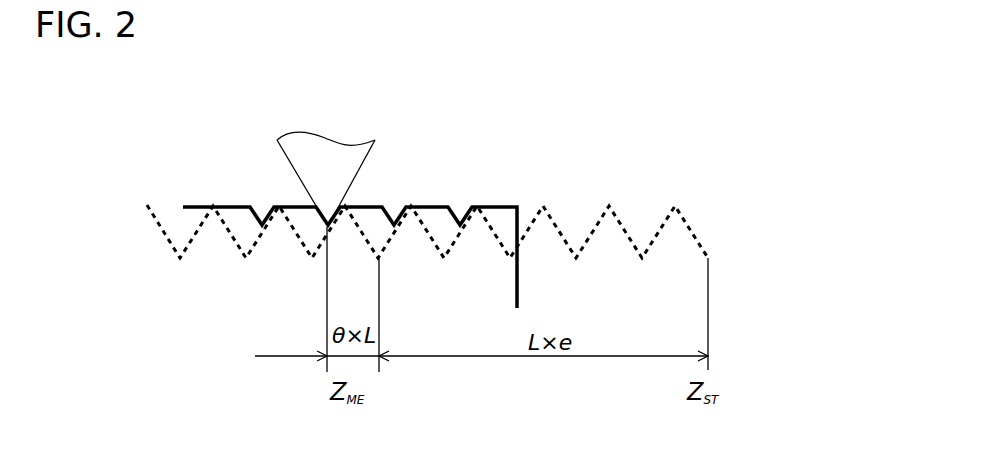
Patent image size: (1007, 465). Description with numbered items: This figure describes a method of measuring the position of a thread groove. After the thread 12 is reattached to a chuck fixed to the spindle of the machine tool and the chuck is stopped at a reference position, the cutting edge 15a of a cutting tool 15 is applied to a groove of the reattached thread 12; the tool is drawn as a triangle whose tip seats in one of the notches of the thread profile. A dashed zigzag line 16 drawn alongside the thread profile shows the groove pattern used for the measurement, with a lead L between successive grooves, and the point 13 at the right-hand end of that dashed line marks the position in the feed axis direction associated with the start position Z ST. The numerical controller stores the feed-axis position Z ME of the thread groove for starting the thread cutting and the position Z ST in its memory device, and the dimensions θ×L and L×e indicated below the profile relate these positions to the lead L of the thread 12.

The thread 12 is at (373, 207).
The machining start position 13 is at (708, 257).
The cutting tool 15 is at (317, 147).
The cutting edge 15a is at (325, 193).
The target shape line 16 is at (563, 240).